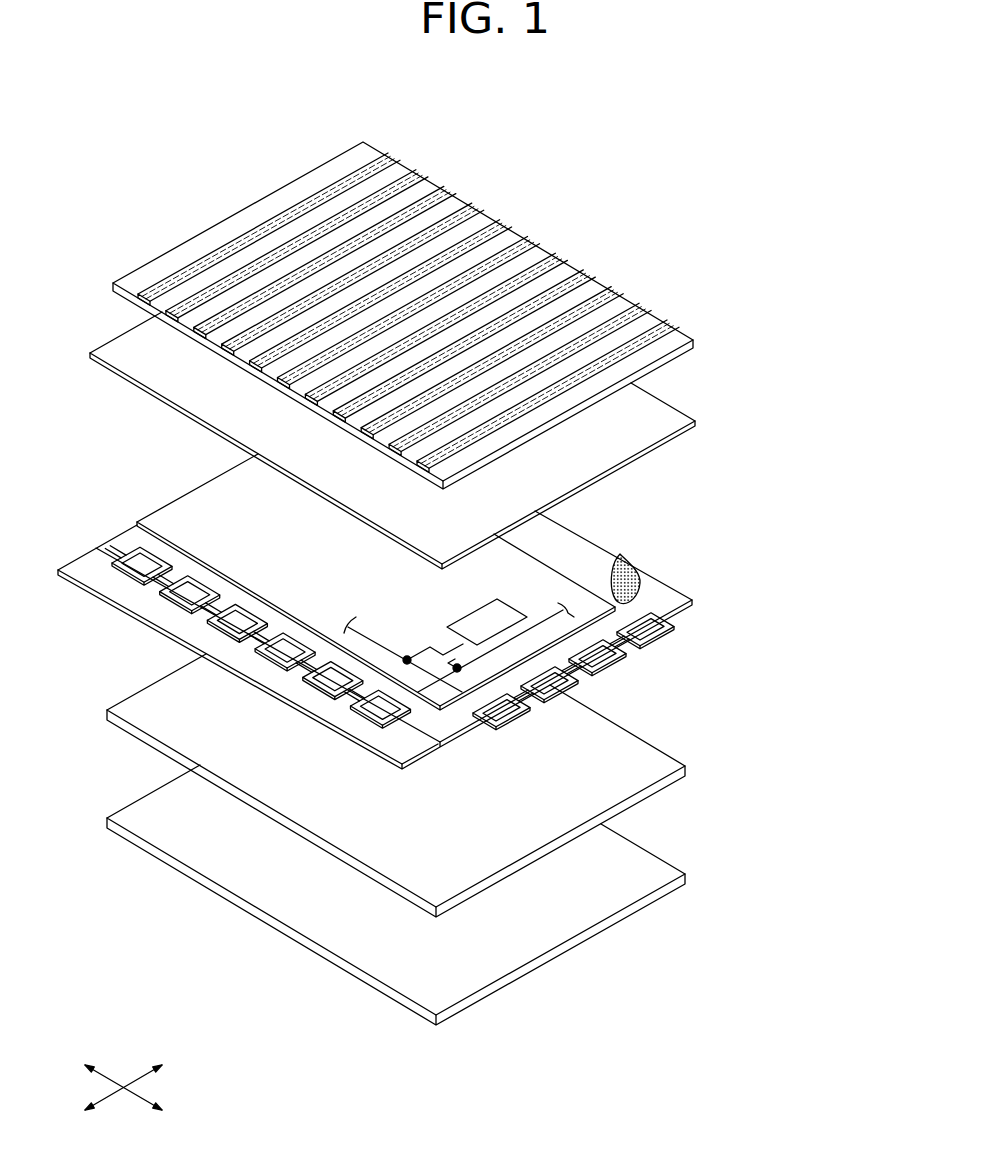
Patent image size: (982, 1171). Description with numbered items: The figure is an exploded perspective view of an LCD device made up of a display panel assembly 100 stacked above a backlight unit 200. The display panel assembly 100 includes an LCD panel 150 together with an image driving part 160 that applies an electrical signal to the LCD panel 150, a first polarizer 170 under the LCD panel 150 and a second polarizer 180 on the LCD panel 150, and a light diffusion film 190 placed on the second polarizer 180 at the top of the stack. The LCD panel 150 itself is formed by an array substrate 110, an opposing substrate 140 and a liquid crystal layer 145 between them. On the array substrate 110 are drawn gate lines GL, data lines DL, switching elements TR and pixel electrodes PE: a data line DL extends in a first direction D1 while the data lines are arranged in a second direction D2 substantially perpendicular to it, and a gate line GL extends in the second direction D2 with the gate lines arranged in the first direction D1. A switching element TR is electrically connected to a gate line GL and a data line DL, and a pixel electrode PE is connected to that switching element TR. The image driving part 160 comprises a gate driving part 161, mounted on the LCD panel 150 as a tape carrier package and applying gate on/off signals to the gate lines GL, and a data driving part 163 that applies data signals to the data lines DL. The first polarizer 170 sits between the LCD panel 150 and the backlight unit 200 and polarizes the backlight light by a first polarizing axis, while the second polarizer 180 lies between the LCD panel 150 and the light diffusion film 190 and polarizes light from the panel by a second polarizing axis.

The display panel assembly 100 is at (845, 338).
The array substrate 110 is at (663, 599).
The opposing substrate 140 is at (588, 549).
The liquid crystal layer 145 is at (620, 578).
The LCD panel 150 is at (787, 487).
The image driving part 160 is at (516, 813).
The gate driving part 161 is at (386, 722).
The data driving part 163 is at (494, 724).
The first polarizer 170 is at (686, 769).
The second polarizer 180 is at (697, 428).
The light diffusion film 190 is at (693, 343).
The backlight unit 200 is at (686, 877).
The data line DL is at (366, 628).
The gate line GL is at (546, 606).
The pixel electrode PE is at (488, 604).
The switching element TR is at (418, 650).
The first direction D1 is at (136, 1097).
The second direction D2 is at (108, 1097).